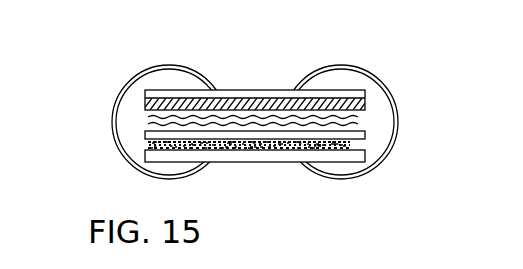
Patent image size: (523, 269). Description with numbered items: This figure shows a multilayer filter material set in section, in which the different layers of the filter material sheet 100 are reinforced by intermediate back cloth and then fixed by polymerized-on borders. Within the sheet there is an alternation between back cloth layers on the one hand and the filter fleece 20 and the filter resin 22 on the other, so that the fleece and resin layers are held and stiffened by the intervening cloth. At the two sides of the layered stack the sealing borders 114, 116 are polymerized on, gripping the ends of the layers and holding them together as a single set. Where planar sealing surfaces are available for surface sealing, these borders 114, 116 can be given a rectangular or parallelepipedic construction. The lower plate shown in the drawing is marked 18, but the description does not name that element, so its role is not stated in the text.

The filter material sheet 100 is at (260, 125).
The sealing border 114 is at (130, 123).
The sealing border 116 is at (383, 127).
The filter fleece 20 is at (367, 103).
The lower plate 18 is at (367, 139).
The filter resin 22 is at (343, 153).